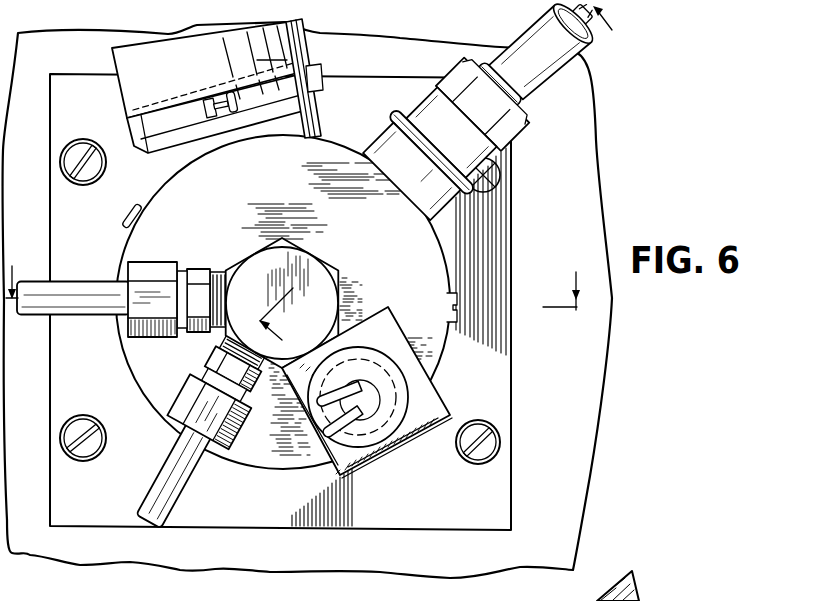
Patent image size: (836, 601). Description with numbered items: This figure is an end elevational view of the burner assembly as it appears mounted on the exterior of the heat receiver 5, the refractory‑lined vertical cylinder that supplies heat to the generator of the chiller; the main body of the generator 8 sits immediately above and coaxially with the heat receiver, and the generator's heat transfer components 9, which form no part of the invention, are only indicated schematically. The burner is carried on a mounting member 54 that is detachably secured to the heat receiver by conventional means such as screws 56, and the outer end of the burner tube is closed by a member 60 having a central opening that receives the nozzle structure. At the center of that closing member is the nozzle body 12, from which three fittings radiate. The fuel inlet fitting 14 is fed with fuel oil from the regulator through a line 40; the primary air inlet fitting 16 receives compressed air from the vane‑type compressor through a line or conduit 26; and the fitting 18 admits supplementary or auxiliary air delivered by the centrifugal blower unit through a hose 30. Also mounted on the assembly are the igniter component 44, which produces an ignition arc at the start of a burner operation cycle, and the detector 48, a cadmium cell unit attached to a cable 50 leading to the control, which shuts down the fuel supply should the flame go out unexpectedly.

The heat receiver 5 is at (427, 548).
The main body of the generator 8 is at (444, 183).
The heat transfer components 9 is at (293, 275).
The nozzle body 12 is at (330, 267).
The fuel inlet fitting 14 is at (218, 357).
The primary air inlet fitting 16 is at (198, 277).
The auxiliary air inlet fitting 18 is at (317, 114).
The line or conduit 26 is at (84, 303).
The hose 30 is at (293, 20).
The line 40 is at (185, 492).
The igniter component 44 is at (528, 43).
The detector 48 is at (405, 386).
The cable 50 is at (382, 400).
The mounting member 54 is at (512, 420).
The screws 56 is at (72, 163).
The closing member 60 is at (304, 181).